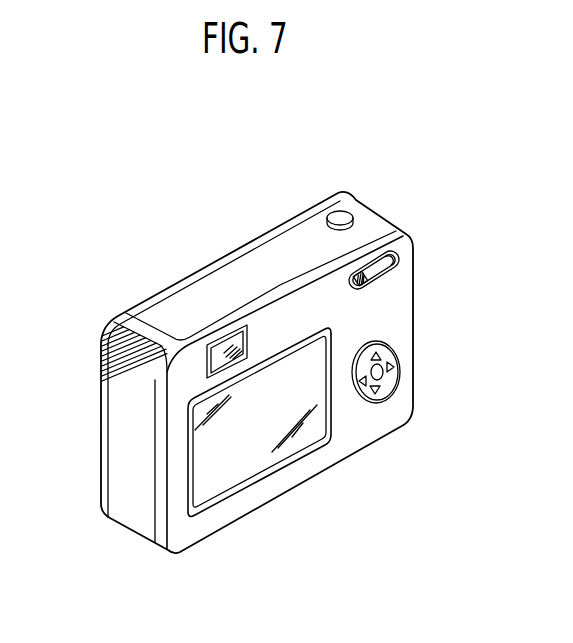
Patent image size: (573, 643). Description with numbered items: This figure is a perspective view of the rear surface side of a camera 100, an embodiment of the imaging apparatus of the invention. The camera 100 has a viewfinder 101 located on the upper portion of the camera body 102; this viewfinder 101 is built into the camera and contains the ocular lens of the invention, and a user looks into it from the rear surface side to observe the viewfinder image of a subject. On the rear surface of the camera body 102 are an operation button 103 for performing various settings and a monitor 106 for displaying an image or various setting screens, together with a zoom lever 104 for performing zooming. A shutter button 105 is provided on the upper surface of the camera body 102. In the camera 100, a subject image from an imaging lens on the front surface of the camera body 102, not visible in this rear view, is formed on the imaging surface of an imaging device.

The camera 100 is at (164, 192).
The viewfinder 101 is at (217, 352).
The camera body 102 is at (117, 446).
The operation button 103 is at (397, 377).
The zoom lever 104 is at (402, 262).
The shutter button 105 is at (342, 215).
The monitor 106 is at (290, 449).